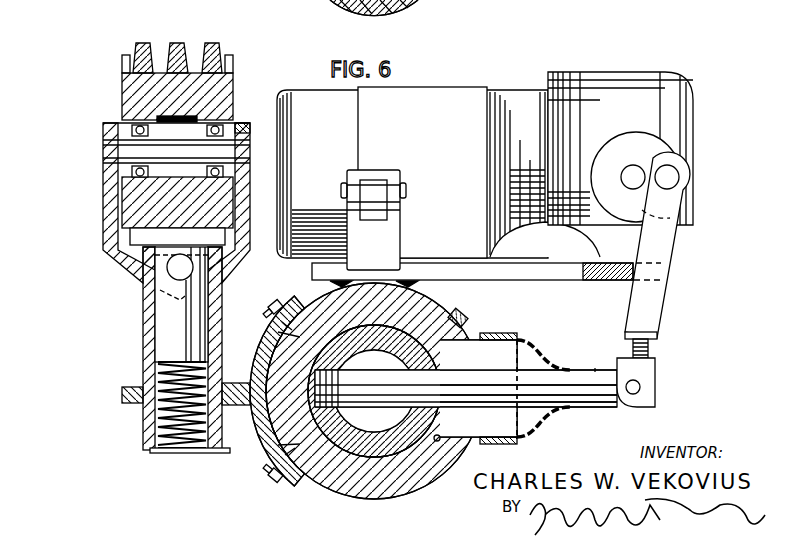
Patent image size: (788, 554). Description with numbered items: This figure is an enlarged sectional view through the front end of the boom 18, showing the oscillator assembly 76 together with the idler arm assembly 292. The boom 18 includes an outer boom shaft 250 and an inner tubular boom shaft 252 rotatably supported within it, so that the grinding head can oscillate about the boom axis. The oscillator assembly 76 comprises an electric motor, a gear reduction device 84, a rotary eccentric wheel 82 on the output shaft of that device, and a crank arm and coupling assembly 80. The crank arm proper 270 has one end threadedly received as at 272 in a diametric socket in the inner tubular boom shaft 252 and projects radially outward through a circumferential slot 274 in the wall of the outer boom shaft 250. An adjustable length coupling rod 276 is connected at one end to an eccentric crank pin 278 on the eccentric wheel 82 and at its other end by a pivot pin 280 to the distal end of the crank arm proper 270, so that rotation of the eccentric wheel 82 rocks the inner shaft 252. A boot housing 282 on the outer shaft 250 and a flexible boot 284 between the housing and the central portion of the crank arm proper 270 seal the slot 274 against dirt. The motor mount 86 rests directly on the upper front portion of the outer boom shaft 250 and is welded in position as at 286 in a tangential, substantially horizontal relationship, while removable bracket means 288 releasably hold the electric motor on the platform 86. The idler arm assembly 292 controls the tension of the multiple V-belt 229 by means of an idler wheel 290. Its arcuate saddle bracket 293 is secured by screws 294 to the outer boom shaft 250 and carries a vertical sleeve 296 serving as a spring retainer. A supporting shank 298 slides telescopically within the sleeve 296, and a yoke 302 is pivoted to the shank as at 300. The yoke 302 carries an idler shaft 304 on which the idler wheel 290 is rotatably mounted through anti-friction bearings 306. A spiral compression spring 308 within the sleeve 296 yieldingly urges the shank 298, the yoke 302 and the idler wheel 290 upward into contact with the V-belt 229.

The boom 18 is at (421, 5).
The oscillator assembly 76 is at (532, 303).
The crank arm and coupling assembly 80 is at (622, 328).
The rotary eccentric wheel 82 is at (641, 156).
The gear reduction device 84 is at (626, 116).
The motor mount 86 is at (551, 272).
The multiple V-belt 229 is at (203, 44).
The outer boom shaft 250 is at (341, 474).
The inner tubular boom shaft 252 is at (373, 452).
The crank arm proper 270 is at (469, 392).
The threaded connection 272 is at (338, 389).
The circumferential slot 274 is at (440, 442).
The adjustable length coupling rod 276 is at (657, 308).
The eccentric crank pin 278 is at (670, 174).
The pivot pin 280 is at (640, 385).
The boot housing 282 is at (463, 318).
The flexible boot 284 is at (530, 338).
The weld 286 is at (416, 284).
The removable bracket means 288 is at (388, 241).
The idler wheel 290 is at (125, 93).
The idler arm assembly 292 is at (130, 223).
The arcuate saddle bracket 293 is at (283, 467).
The screws 294 is at (258, 450).
The vertical sleeve 296 is at (150, 428).
The supporting shank 298 is at (168, 342).
The pivot 300 is at (178, 276).
The yoke 302 is at (116, 302).
The idler shaft 304 is at (110, 154).
The anti-friction bearings 306 is at (233, 112).
The spiral compression spring 308 is at (140, 400).